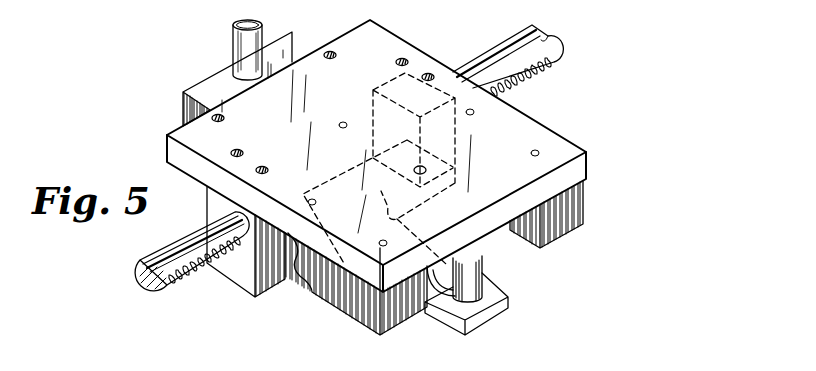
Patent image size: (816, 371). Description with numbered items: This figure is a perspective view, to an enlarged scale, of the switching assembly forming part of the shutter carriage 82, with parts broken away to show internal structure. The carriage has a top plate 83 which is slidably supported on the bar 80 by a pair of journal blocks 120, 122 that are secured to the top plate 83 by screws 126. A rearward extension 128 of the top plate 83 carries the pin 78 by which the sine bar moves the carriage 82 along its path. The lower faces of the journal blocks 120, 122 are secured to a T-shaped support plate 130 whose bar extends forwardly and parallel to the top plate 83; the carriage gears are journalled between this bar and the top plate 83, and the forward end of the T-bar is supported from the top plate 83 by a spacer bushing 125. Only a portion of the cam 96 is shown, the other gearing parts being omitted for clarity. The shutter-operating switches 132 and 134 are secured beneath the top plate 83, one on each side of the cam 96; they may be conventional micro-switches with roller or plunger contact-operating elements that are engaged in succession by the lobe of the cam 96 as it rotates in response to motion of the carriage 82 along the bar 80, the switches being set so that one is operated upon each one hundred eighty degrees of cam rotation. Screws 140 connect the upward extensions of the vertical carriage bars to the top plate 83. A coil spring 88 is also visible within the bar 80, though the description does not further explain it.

The pin 78 is at (236, 46).
The rearward extension 128 is at (203, 92).
The screws 140 is at (338, 54).
The screws 126 is at (421, 77).
The journal block 122 is at (458, 137).
The bar 80 is at (497, 58).
The coil spring 88 is at (540, 72).
The carriage 82 is at (619, 123).
The top plate 83 is at (581, 171).
The shutter-operating switch 134 is at (574, 225).
The spacer bushing 125 is at (485, 268).
The T-shaped support plate 130 is at (266, 290).
The cam 96 is at (444, 293).
The shutter-operating switch 132 is at (360, 313).
The journal block 120 is at (216, 208).